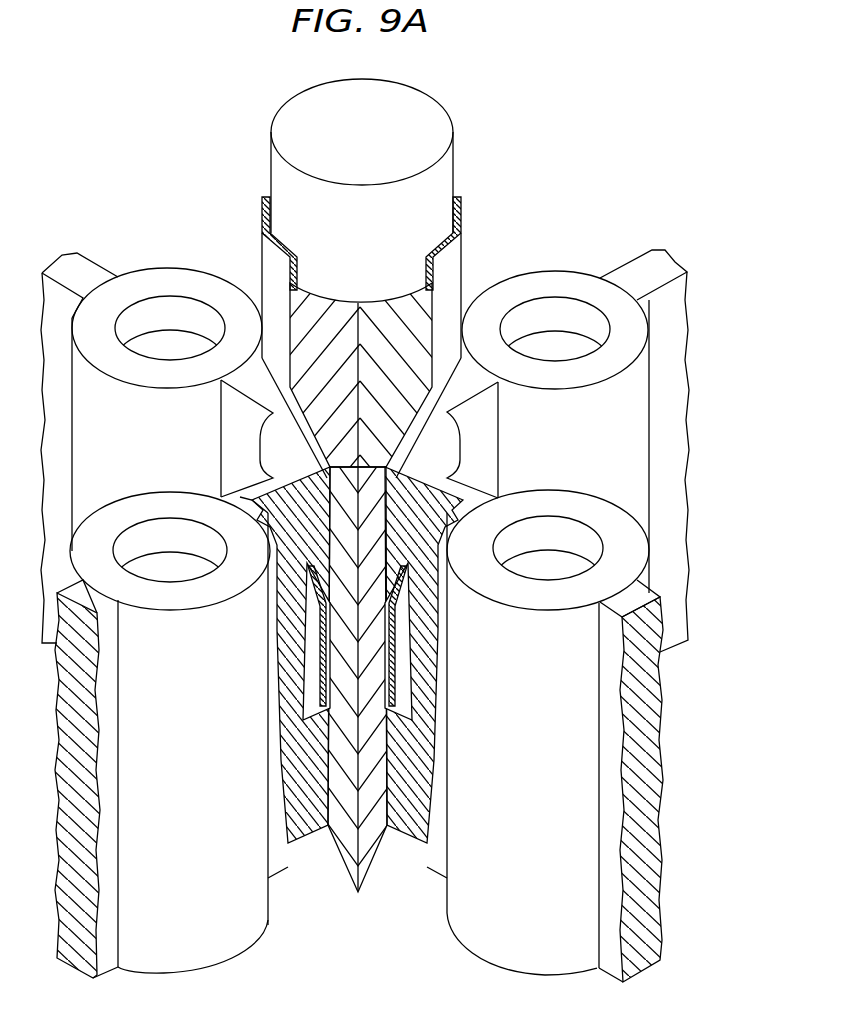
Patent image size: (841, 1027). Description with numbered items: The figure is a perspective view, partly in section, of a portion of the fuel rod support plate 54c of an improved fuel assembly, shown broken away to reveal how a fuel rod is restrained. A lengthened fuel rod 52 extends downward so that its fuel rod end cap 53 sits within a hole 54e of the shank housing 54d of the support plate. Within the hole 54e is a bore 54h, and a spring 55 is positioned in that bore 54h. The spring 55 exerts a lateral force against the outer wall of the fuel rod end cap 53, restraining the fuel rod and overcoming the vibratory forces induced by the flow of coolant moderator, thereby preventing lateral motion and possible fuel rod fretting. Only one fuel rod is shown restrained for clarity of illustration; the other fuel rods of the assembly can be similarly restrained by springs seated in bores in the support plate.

The lengthened fuel rod 52 is at (277, 264).
The fuel rod end cap 53 is at (276, 351).
The fuel rod support plate 54c is at (670, 372).
The shank housing 54d is at (485, 930).
The hole 54e is at (157, 563).
The bore 54h is at (392, 685).
The spring 55 is at (320, 633).